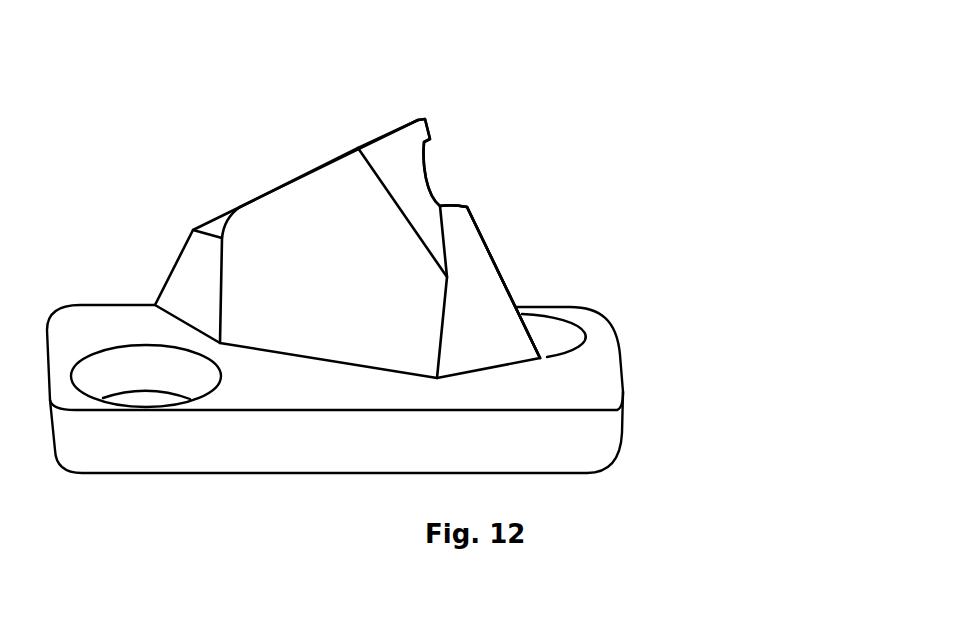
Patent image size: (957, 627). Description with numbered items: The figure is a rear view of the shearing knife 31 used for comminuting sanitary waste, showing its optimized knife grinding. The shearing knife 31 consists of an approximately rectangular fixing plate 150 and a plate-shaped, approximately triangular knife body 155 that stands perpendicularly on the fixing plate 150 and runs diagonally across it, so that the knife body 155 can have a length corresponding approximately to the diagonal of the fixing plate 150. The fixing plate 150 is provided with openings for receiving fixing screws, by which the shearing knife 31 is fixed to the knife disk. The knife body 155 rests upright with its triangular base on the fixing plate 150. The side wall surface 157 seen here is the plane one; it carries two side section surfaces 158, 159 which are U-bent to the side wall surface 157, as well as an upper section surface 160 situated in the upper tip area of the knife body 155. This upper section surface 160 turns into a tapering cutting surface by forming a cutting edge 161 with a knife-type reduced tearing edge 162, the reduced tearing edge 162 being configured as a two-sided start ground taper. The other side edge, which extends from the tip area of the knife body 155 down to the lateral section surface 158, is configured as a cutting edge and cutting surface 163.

The shearing knife 31 is at (173, 225).
The fixing plate 150 is at (283, 440).
The knife body 155 is at (498, 237).
The side wall surface 157 is at (317, 243).
The side section surface 158 is at (190, 292).
The side section surface 159 is at (475, 328).
The upper section surface 160 is at (393, 160).
The cutting edge 161 is at (477, 217).
The reduced tearing edge 162 is at (428, 158).
The cutting edge and cutting surface 163 is at (222, 217).